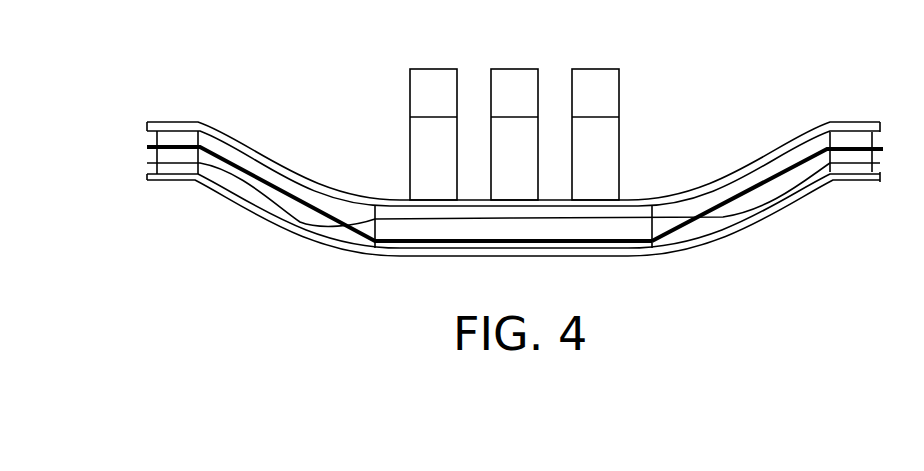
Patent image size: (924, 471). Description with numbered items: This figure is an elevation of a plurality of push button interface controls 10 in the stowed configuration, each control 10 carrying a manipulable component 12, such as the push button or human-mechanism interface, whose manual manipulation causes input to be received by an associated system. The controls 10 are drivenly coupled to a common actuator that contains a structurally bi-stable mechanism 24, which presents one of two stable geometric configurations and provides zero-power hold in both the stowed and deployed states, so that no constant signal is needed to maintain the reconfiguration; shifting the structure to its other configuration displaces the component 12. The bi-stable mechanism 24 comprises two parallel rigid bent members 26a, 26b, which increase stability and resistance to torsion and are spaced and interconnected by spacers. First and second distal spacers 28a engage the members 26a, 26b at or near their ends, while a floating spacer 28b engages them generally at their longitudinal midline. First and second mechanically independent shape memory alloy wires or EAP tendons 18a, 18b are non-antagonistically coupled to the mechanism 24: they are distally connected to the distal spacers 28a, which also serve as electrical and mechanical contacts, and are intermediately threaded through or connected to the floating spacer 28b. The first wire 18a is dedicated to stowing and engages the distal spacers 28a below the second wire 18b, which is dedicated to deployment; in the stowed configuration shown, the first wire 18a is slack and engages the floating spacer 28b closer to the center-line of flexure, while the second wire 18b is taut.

The control 10 is at (298, 33).
The manipulable component 12 is at (442, 69).
The first SMA wire 18a is at (767, 210).
The second SMA wire 18b is at (322, 211).
The bi-stable mechanism 24 is at (236, 228).
The first rigid member 26a is at (687, 192).
The second rigid member 26b is at (715, 245).
The distal spacer 28a is at (838, 140).
The floating spacer 28b is at (405, 230).